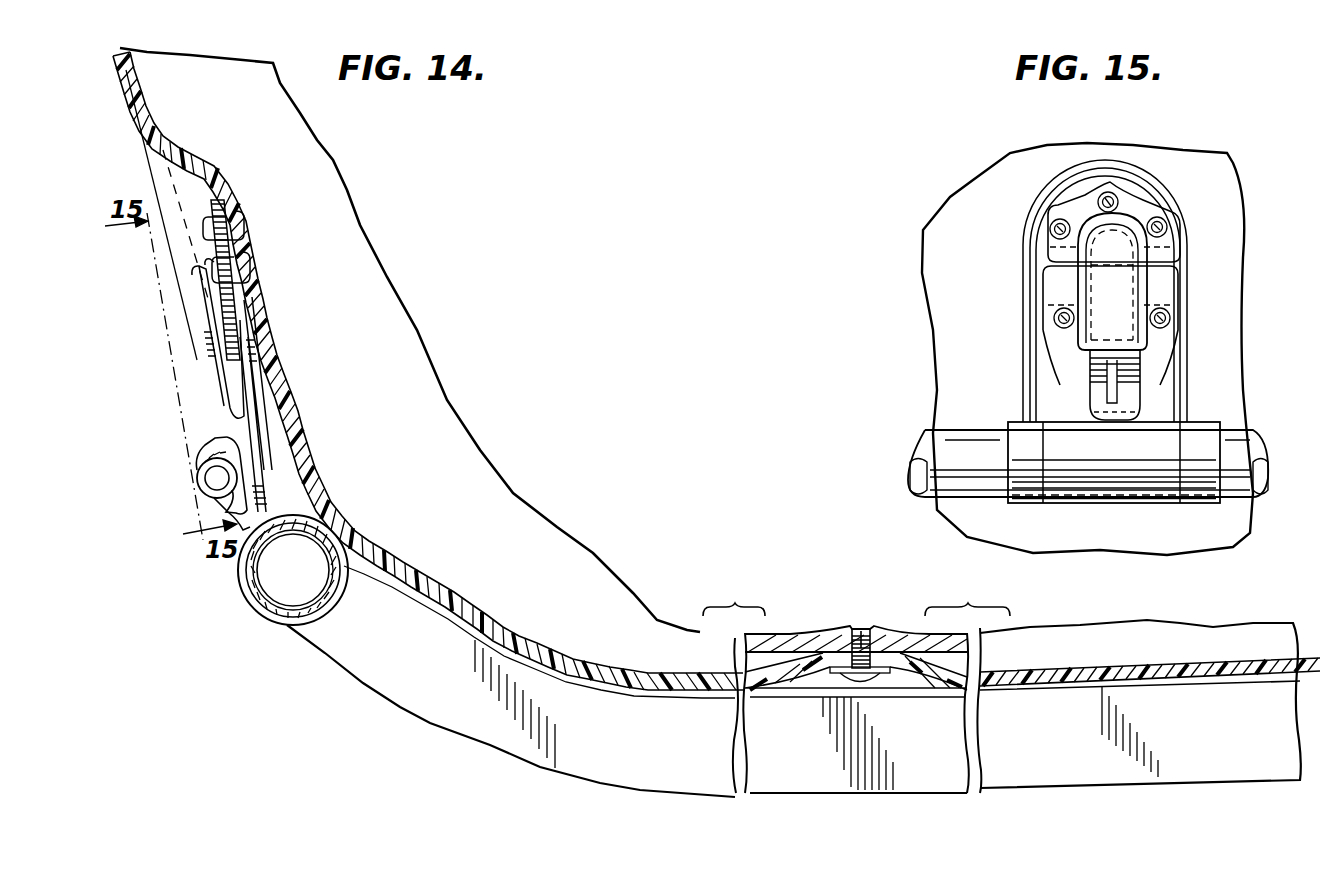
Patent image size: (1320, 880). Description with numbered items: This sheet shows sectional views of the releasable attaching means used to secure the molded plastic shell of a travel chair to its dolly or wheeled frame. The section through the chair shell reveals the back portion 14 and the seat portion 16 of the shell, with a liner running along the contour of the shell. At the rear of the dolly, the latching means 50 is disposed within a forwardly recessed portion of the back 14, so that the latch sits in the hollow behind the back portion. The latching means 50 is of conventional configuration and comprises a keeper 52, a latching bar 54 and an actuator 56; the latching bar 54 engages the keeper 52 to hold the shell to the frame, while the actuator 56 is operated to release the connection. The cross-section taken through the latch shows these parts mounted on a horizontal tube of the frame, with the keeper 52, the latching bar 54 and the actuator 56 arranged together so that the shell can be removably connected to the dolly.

In FIG. 14, the back portion 14 is at (561, 422).
In FIG. 14, the seat portion 16 is at (1190, 636).
In FIG. 15, the latching means 50 is at (1216, 240).
In FIG. 15, the keeper 52 is at (1120, 237).
In FIG. 14, the latching bar 54 is at (218, 322).
In FIG. 15, the latching bar 54 is at (1143, 298).
In FIG. 14, the actuator 56 is at (233, 433).
In FIG. 15, the actuator 56 is at (1127, 402).